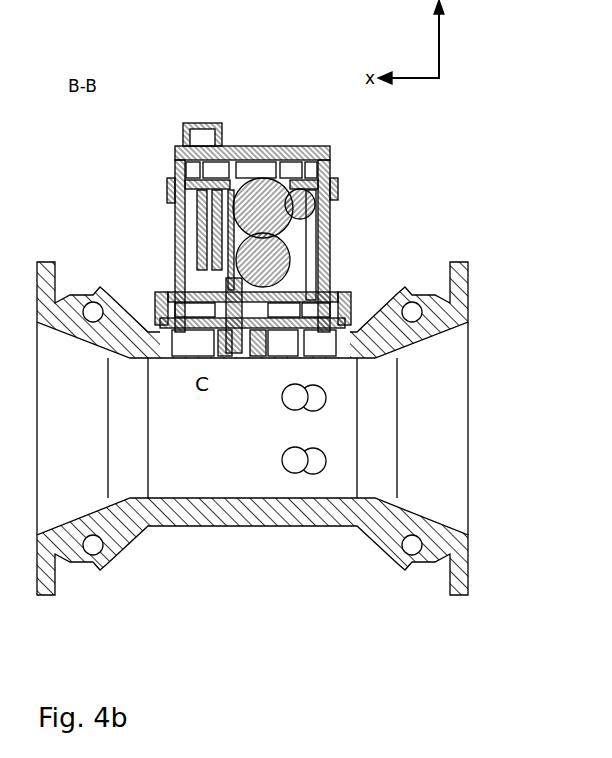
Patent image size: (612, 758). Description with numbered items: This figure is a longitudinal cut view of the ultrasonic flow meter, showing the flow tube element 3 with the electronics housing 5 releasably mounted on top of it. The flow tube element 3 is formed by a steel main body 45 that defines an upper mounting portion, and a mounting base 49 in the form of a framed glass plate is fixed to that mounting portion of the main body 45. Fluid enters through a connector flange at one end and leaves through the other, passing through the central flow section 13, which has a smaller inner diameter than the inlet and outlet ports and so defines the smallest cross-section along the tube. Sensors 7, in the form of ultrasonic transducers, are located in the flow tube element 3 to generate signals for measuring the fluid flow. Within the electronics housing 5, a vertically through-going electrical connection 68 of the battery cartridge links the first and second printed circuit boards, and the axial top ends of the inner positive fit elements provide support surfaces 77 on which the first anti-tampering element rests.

The flow tube element 3 is at (288, 548).
The electronics housing 5 is at (230, 240).
The sensors 7 is at (298, 398).
The central flow section 13 is at (216, 510).
The main body 45 is at (388, 324).
The mounting base 49 is at (306, 318).
The electrical connection 68 is at (197, 231).
The support surface 77 is at (194, 261).